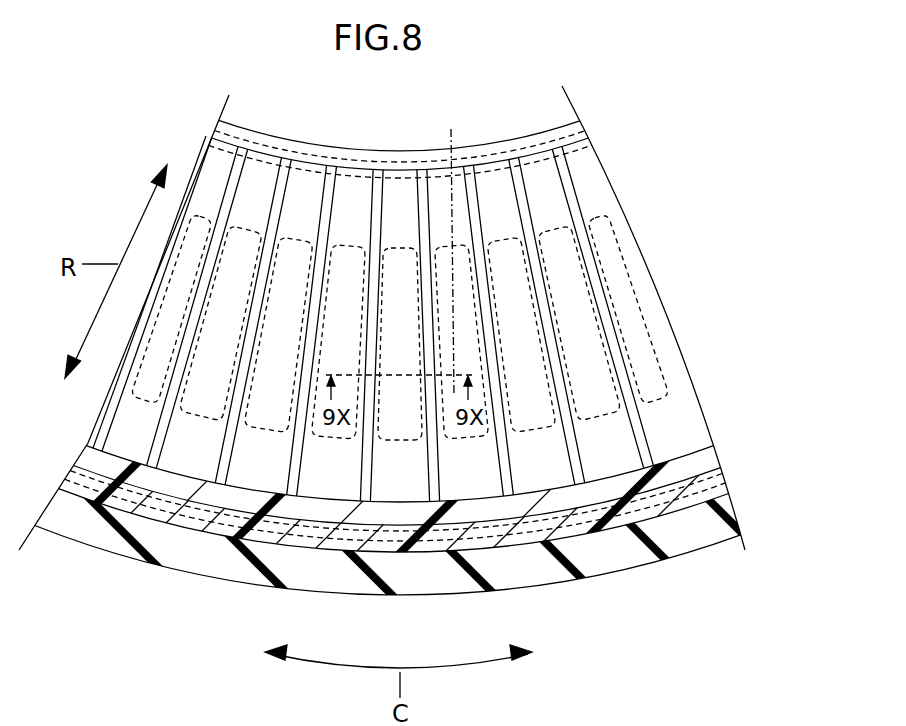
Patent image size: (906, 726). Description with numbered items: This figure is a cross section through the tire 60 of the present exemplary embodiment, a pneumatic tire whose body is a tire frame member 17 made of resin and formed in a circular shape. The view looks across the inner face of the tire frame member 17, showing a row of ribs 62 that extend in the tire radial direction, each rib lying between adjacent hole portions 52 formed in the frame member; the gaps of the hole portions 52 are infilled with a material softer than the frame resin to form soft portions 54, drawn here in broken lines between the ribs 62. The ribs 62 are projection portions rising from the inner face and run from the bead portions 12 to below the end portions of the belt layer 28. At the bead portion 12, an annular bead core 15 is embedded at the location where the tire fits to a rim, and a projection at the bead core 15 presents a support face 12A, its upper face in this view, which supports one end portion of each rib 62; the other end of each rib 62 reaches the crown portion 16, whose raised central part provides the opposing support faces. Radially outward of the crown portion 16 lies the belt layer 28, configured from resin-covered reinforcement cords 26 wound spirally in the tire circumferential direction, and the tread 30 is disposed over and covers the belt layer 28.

The tire 60 is at (284, 108).
The ribs 62 is at (368, 213).
The hole portions 52 is at (468, 127).
The bead portions 12 is at (538, 134).
The bead core 15 is at (596, 165).
The support face 12A is at (538, 156).
The soft portions 54 is at (470, 328).
The crown portion 16 is at (668, 458).
The tire frame member 17 is at (668, 398).
The belt layer 28 is at (718, 480).
The reinforcement cords 26 is at (683, 497).
The tread 30 is at (605, 570).